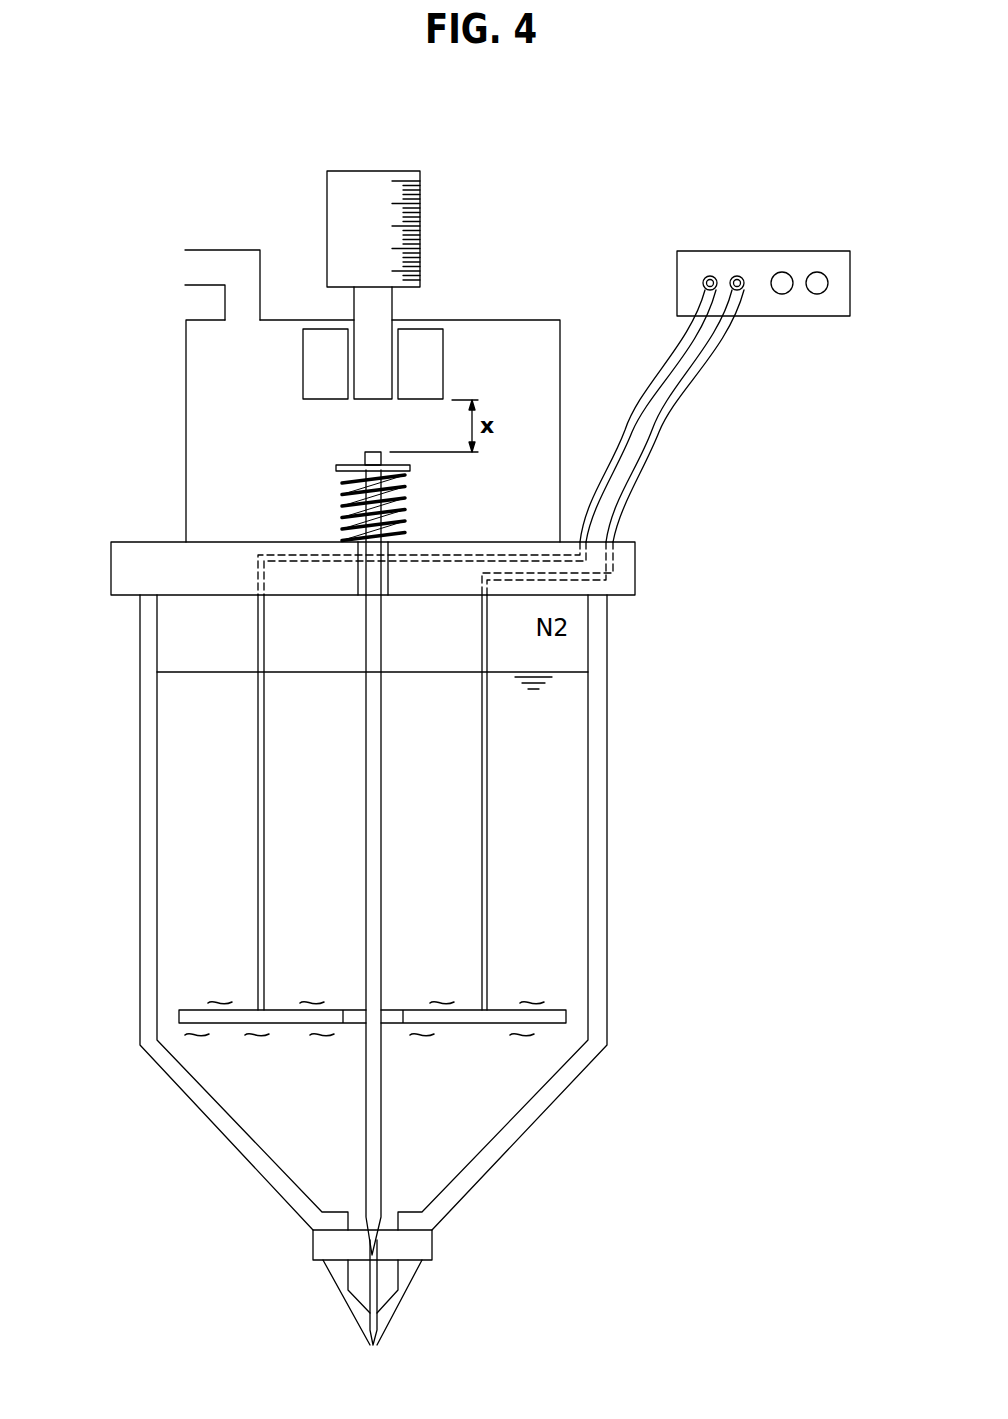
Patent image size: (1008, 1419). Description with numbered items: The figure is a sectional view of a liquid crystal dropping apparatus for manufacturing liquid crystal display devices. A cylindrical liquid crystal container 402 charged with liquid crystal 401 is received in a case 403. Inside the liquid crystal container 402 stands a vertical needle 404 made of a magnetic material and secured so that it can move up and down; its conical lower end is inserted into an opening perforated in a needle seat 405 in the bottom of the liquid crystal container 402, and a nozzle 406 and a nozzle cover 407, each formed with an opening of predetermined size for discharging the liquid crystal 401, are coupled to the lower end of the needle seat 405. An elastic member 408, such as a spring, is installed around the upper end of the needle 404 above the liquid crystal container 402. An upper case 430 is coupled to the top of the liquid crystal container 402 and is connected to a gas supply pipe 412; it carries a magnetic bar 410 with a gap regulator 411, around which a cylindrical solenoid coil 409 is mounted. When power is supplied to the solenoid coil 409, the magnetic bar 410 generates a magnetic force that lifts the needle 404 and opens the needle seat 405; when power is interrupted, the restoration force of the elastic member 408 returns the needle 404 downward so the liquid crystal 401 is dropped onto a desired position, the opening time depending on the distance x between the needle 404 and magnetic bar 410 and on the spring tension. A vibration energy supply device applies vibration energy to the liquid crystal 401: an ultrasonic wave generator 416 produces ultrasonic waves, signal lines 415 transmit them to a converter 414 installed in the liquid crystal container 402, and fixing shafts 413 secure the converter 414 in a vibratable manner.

The liquid crystal 401 is at (565, 710).
The liquid crystal container 402 is at (590, 777).
The case 403 is at (608, 922).
The needle 404 is at (375, 793).
The needle seat 405 is at (423, 1243).
The nozzle 406 is at (395, 1272).
The nozzle cover 407 is at (385, 1315).
The elastic member 408 is at (395, 500).
The solenoid coil 409 is at (435, 365).
The magnetic bar 410 is at (383, 300).
The gap regulator 411 is at (370, 170).
The gas supply pipe 412 is at (218, 250).
The fixing shafts 413 is at (487, 848).
The converter 414 is at (568, 1015).
The signal lines 415 is at (640, 440).
The ultrasonic wave generator 416 is at (763, 251).
The upper case 430 is at (542, 320).